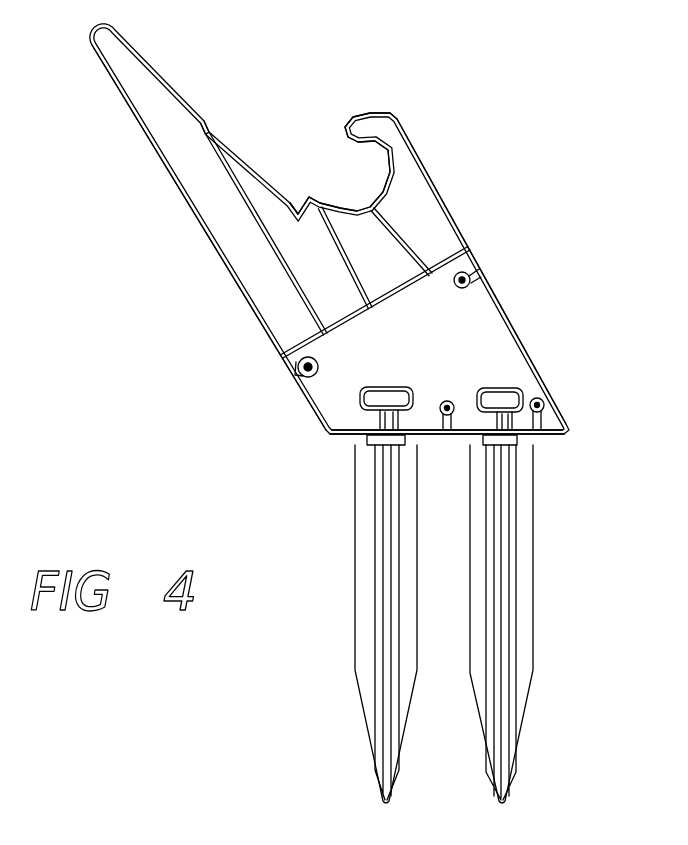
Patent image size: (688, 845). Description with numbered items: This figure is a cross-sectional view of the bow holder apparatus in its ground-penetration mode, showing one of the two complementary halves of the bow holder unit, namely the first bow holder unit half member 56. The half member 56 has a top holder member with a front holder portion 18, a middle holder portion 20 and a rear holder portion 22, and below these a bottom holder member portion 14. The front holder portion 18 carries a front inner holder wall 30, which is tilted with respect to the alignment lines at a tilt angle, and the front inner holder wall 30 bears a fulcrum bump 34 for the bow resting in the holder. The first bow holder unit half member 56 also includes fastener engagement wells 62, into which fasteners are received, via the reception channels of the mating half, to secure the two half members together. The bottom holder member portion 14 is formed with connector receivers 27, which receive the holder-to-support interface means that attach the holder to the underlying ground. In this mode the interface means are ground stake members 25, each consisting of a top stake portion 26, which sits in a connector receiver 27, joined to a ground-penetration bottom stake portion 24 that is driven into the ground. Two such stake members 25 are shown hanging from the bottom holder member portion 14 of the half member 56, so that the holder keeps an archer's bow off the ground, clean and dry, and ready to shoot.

The bottom holder member portion 14 is at (532, 357).
The front holder portion 18 is at (148, 143).
The middle holder portion 20 is at (400, 231).
The rear holder portion 22 is at (381, 91).
The ground-penetration bottom stake portion 24 is at (373, 670).
The ground stake member 25 is at (348, 537).
The top stake portion 26 is at (328, 435).
The connector receiver 27 is at (390, 393).
The front inner holder wall 30 is at (204, 108).
The fulcrum bump 34 is at (318, 212).
The first bow holder unit half member 56 is at (440, 176).
The fastener engagement well 62 is at (283, 357).